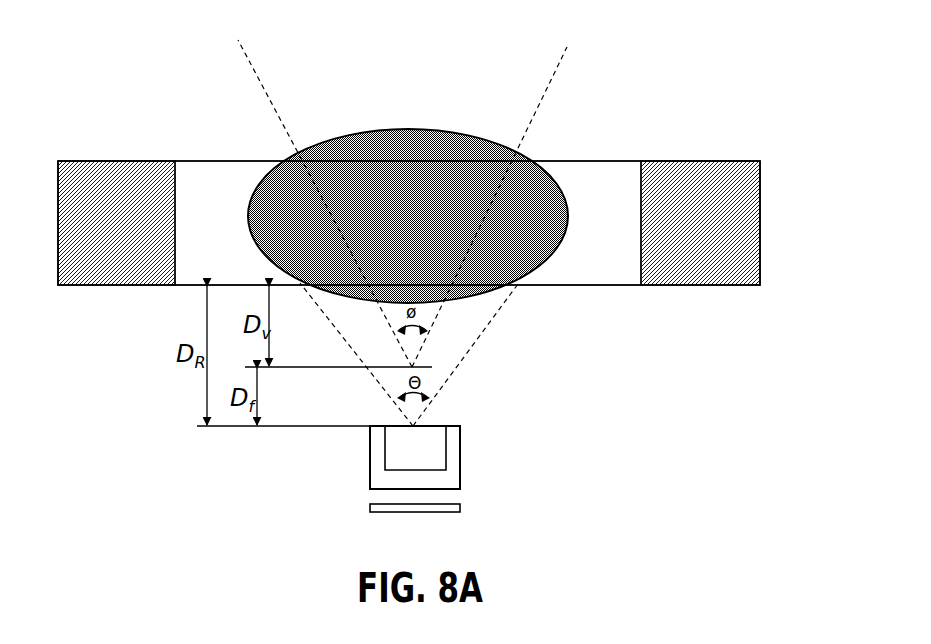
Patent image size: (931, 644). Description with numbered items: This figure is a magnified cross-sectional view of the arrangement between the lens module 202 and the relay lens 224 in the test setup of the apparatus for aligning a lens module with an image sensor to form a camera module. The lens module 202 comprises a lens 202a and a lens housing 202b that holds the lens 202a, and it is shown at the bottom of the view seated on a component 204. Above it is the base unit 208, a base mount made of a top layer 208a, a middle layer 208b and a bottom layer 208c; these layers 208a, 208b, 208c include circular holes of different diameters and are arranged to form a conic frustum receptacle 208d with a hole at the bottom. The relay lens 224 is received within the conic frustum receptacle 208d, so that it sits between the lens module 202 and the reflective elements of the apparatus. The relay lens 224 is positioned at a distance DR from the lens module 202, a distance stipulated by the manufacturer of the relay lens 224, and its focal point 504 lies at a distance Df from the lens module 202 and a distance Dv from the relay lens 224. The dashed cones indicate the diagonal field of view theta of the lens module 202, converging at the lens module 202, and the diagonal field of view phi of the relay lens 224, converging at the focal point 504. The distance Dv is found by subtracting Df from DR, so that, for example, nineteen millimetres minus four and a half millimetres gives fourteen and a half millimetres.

The lens module 202 is at (413, 445).
The lens 202a is at (418, 438).
The lens housing 202b is at (453, 468).
The substrate 204 is at (450, 508).
The base unit 208 is at (681, 295).
The top layer 208a is at (115, 178).
The middle layer 208b is at (715, 178).
The bottom layer 208c is at (409, 223).
The conic frustum receptacle 208d is at (607, 178).
The relay lens 224 is at (408, 130).
The focal point 504 is at (412, 367).